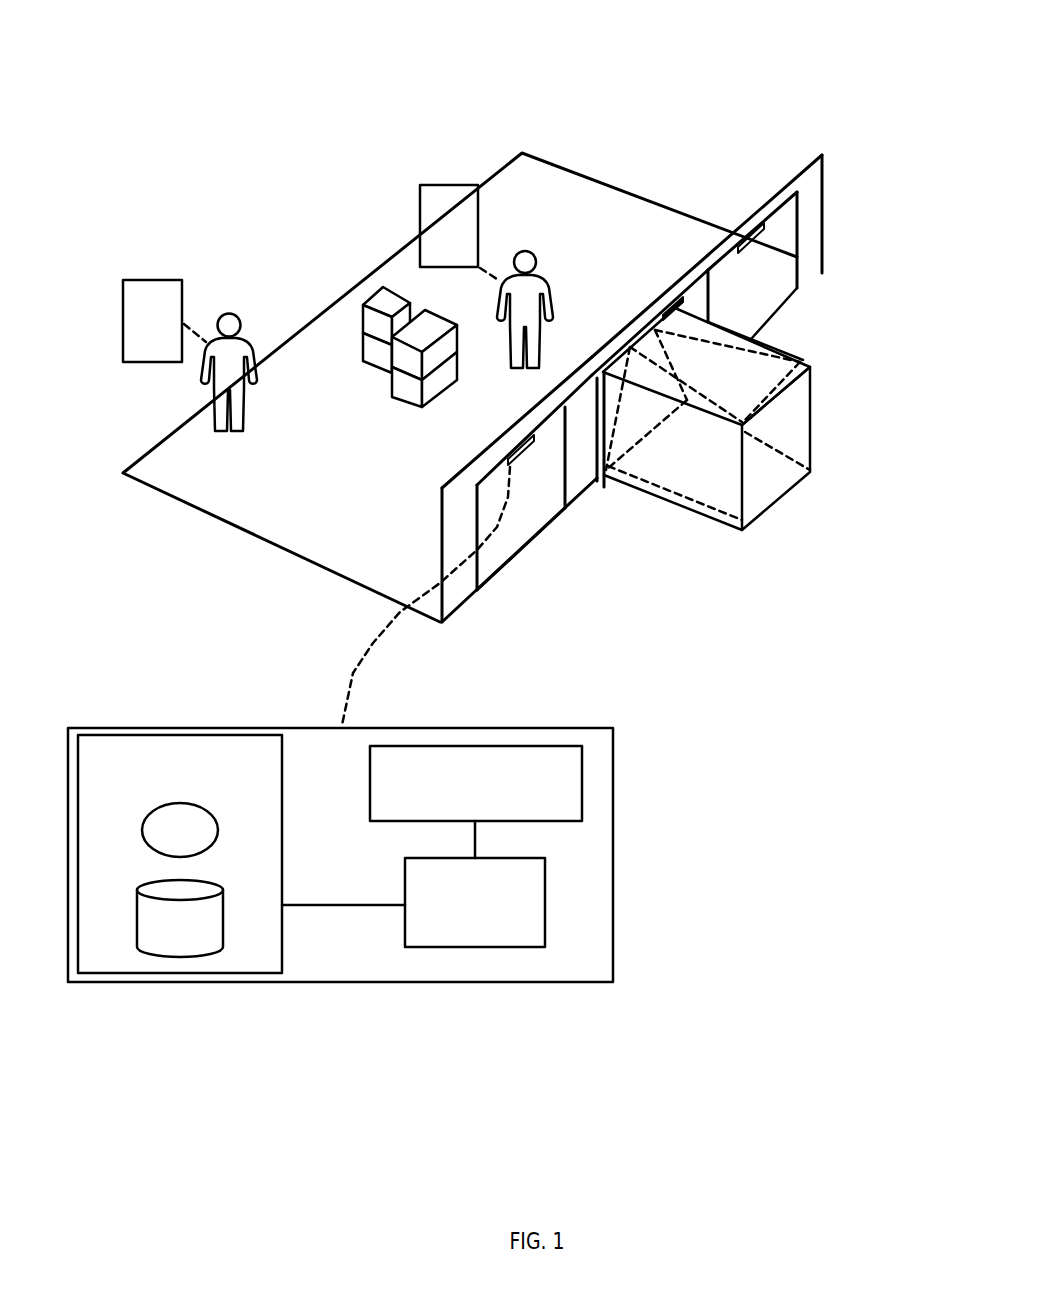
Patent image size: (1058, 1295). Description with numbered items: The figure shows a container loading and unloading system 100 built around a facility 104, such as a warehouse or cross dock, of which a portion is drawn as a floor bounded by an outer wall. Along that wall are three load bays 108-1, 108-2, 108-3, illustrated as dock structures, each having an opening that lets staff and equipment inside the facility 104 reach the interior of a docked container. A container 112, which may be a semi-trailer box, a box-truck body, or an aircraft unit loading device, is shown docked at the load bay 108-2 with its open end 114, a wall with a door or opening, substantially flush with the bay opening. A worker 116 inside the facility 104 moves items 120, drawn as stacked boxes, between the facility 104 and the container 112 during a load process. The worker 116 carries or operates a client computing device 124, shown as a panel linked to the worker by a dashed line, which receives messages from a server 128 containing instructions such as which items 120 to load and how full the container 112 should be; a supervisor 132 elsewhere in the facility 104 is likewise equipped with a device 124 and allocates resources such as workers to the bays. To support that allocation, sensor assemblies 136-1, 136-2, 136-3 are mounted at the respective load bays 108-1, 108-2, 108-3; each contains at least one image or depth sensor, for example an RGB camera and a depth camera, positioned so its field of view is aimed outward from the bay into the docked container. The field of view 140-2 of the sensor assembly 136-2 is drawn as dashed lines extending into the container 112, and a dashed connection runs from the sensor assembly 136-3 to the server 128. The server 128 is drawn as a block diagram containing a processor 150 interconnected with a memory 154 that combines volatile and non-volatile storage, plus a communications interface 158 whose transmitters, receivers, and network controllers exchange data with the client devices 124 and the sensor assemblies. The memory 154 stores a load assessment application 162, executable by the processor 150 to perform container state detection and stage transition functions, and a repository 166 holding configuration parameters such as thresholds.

The container loading and unloading system 100 is at (737, 103).
The facility 104 is at (514, 146).
The load bay 108-1 is at (800, 237).
The load bay 108-2 is at (662, 305).
The load bay 108-3 is at (498, 570).
The container 112 is at (832, 403).
The open end 114 is at (597, 403).
The worker 116 is at (521, 250).
The items 120 is at (370, 297).
The client computing device 124 is at (431, 238).
The server 128 is at (340, 907).
The supervisor 132 is at (232, 312).
The sensor assembly 136-1 is at (762, 235).
The sensor assembly 136-2 is at (633, 333).
The sensor assembly 136-3 is at (510, 460).
The field of view 140-2 is at (633, 453).
The processor 150 is at (457, 902).
The memory 154 is at (197, 769).
The communications interface 158 is at (459, 782).
The load assessment application 162 is at (162, 842).
The repository 166 is at (162, 932).